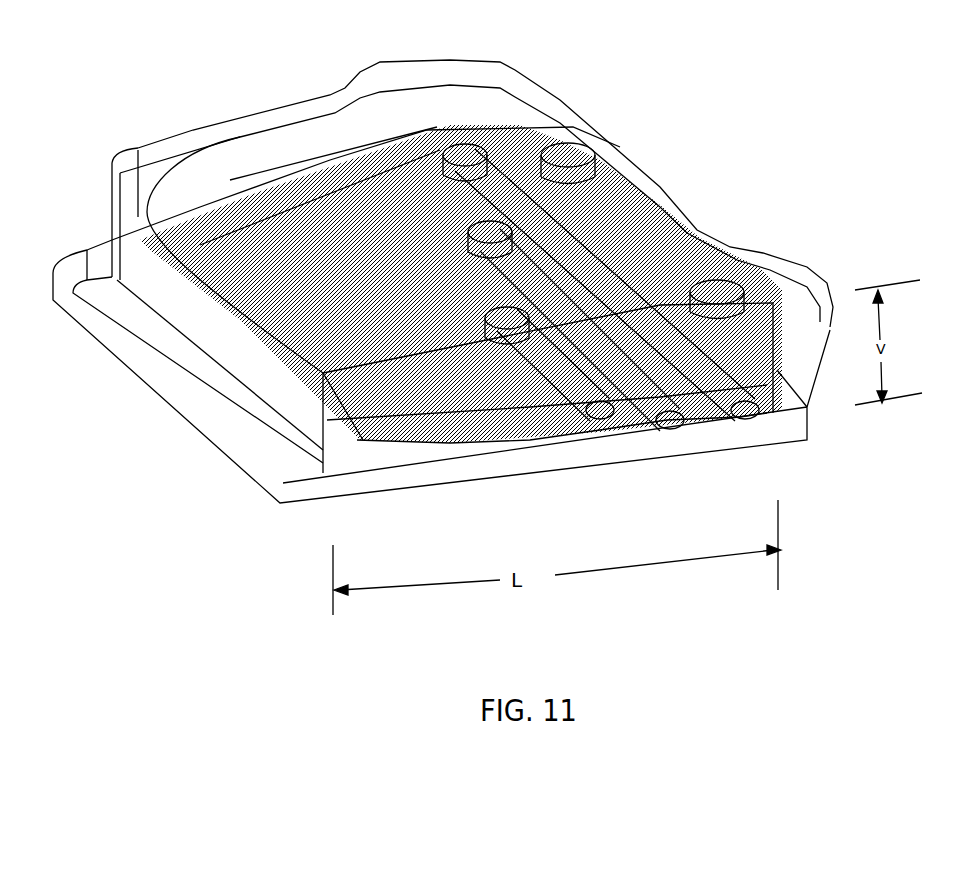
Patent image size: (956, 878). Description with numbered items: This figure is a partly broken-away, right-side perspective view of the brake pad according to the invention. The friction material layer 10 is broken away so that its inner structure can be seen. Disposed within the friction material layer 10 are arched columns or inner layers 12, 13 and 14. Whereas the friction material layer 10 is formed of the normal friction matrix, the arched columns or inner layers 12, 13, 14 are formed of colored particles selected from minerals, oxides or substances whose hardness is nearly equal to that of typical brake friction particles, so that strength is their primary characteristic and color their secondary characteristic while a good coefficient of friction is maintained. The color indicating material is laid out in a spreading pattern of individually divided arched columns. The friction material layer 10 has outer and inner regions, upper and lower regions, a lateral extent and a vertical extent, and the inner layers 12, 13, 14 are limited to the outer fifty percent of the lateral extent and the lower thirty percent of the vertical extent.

The friction material layer 10 is at (355, 105).
The arched column or inner layer 12 is at (595, 422).
The arched column or inner layer 13 is at (670, 425).
The arched column or inner layer 14 is at (745, 415).